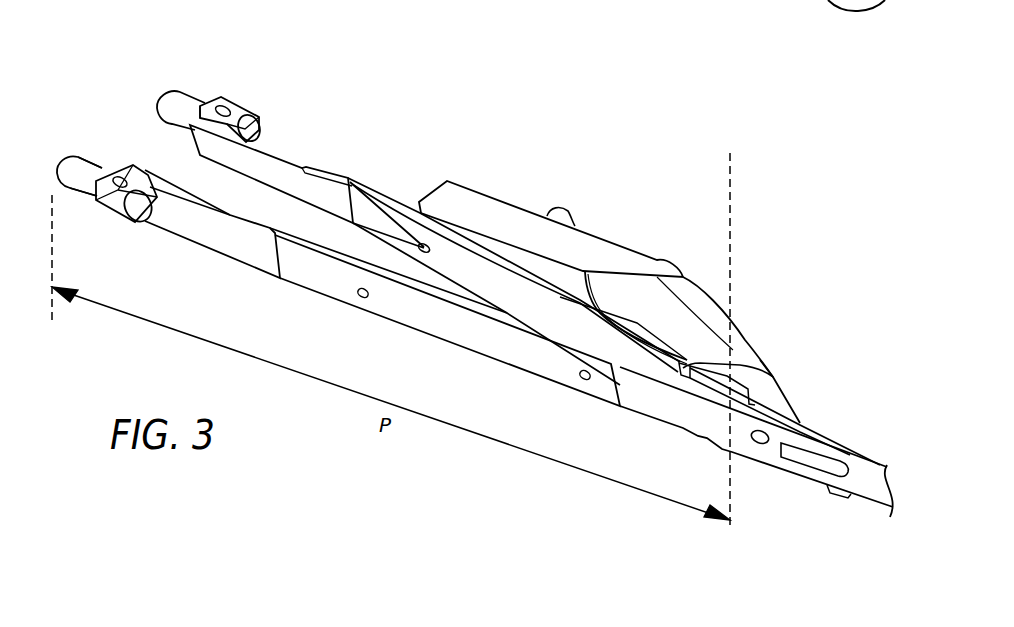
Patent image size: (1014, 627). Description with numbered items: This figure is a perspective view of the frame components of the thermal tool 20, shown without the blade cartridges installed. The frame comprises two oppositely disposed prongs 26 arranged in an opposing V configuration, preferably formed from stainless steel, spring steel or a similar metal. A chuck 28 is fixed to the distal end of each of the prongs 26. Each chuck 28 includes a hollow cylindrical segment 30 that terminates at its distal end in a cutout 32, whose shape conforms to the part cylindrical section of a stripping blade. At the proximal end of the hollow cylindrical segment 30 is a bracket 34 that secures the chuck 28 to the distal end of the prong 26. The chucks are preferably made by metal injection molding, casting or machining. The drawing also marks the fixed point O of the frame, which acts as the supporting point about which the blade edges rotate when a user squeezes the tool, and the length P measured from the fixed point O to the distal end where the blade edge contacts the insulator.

The thermal tool 20 is at (504, 184).
The prongs 26 is at (280, 278).
The chuck 28 is at (248, 88).
The hollow cylindrical segment 30 is at (72, 199).
The cutout 32 is at (175, 100).
The bracket 34 is at (108, 215).
The fixed point O is at (732, 403).